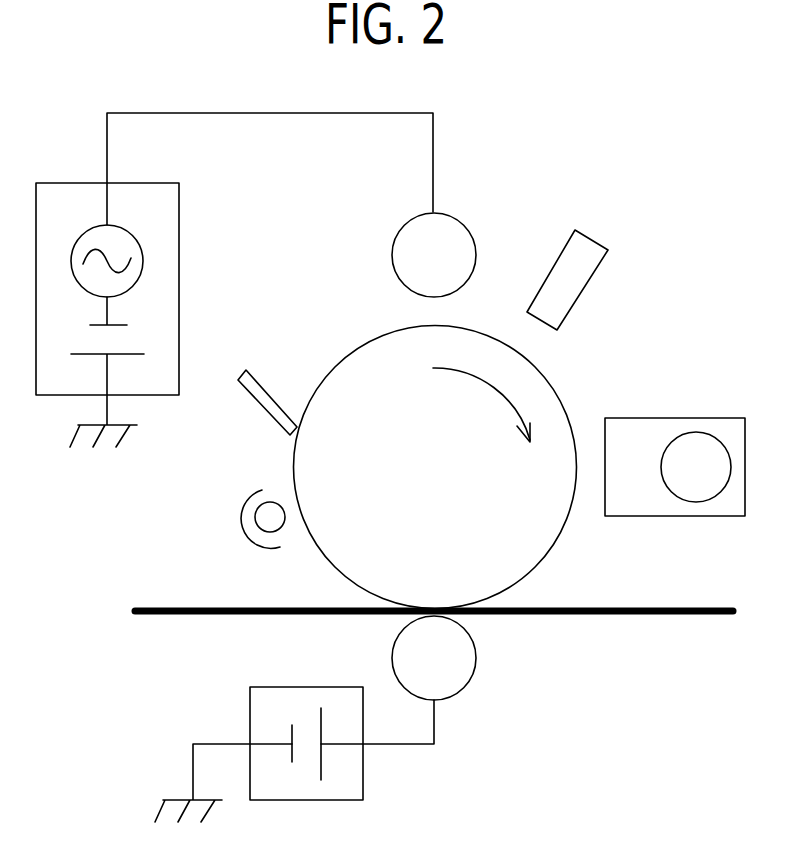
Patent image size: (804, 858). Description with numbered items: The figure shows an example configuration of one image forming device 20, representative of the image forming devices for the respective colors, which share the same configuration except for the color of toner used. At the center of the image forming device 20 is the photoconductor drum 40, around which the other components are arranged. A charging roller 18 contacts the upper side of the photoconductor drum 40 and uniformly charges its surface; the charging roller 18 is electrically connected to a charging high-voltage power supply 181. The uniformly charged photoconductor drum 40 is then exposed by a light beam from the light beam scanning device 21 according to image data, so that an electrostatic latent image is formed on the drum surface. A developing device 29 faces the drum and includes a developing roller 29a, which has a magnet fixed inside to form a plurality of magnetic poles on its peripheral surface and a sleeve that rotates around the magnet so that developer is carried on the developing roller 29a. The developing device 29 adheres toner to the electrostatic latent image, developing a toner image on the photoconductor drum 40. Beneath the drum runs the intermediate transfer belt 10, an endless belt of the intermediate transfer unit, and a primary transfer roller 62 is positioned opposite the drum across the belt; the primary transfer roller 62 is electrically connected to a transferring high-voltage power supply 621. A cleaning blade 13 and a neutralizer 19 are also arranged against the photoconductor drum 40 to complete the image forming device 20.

The image forming device 20 is at (620, 86).
The charging high-voltage power supply 181 is at (150, 183).
The charging roller 18 is at (450, 210).
The light beam scanning device 21 is at (592, 239).
The photoconductor drum 40 is at (364, 343).
The cleaning blade 13 is at (262, 408).
The neutralizer 19 is at (242, 529).
The developing device 29 is at (675, 418).
The developing roller 29a is at (697, 502).
The intermediate transfer belt 10 is at (250, 617).
The primary transfer roller 62 is at (478, 658).
The transferring high-voltage power supply 621 is at (367, 783).